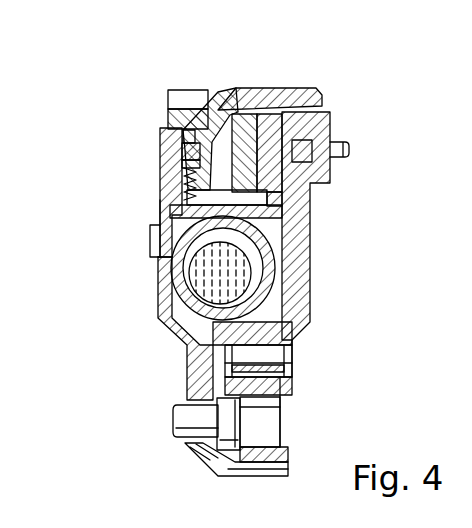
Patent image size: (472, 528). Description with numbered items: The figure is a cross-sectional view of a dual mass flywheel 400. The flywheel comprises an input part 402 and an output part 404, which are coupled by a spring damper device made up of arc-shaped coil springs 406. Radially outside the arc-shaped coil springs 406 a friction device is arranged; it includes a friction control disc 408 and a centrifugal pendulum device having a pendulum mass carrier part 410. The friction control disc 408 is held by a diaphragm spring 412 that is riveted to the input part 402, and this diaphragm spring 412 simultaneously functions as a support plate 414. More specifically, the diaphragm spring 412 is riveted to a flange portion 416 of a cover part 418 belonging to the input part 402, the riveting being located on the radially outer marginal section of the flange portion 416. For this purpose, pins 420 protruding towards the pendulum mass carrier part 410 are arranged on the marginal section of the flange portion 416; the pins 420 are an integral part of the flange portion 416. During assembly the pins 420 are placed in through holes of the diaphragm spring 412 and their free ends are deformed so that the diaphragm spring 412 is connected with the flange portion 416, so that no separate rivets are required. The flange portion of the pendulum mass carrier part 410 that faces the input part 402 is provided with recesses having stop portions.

The dual mass flywheel 400 is at (296, 362).
The input part 402 is at (146, 272).
The output part 404 is at (310, 277).
The arc-shaped coil springs 406 is at (190, 308).
The friction control disc 408 is at (165, 178).
The pendulum mass carrier part 410 is at (281, 116).
The diaphragm spring 412 is at (163, 163).
The support plate 414 is at (163, 163).
The flange portion 416 is at (163, 130).
The cover part 418 is at (268, 238).
The pins 420 is at (186, 128).